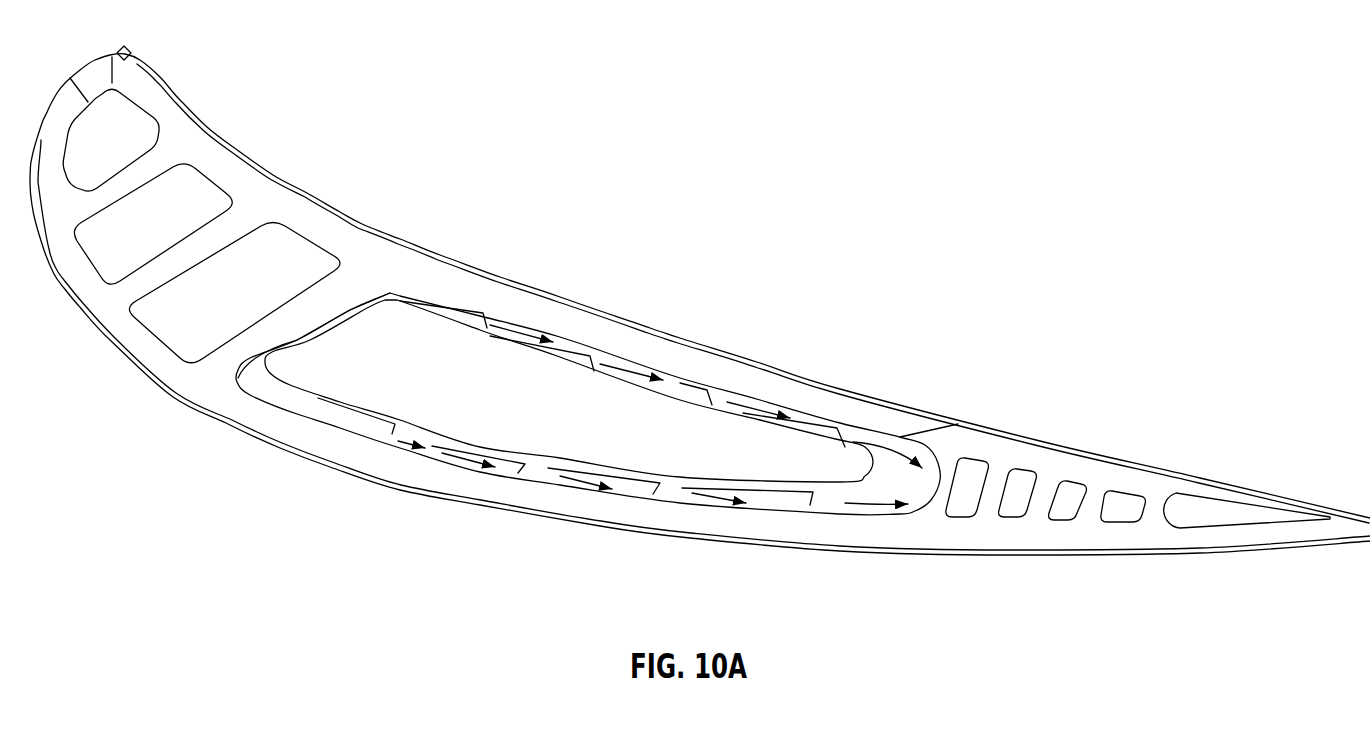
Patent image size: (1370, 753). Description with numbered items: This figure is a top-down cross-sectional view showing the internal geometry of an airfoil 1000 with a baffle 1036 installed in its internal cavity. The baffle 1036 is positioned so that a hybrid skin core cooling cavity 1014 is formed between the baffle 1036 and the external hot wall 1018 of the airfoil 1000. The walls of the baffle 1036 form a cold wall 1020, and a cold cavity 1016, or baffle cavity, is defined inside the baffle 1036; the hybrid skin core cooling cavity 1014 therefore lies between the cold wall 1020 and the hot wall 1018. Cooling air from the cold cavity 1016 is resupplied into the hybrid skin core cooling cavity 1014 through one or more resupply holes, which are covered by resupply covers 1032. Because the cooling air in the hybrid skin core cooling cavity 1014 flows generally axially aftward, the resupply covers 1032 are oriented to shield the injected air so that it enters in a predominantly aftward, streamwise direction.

The airfoil 1000 is at (332, 212).
The hybrid skin core cooling cavity 1014 is at (690, 378).
The cold cavity 1016 is at (450, 382).
The hot wall 1018 is at (613, 347).
The cold wall 1020 is at (546, 458).
The resupply covers 1032 is at (487, 320).
The baffle 1036 is at (392, 288).